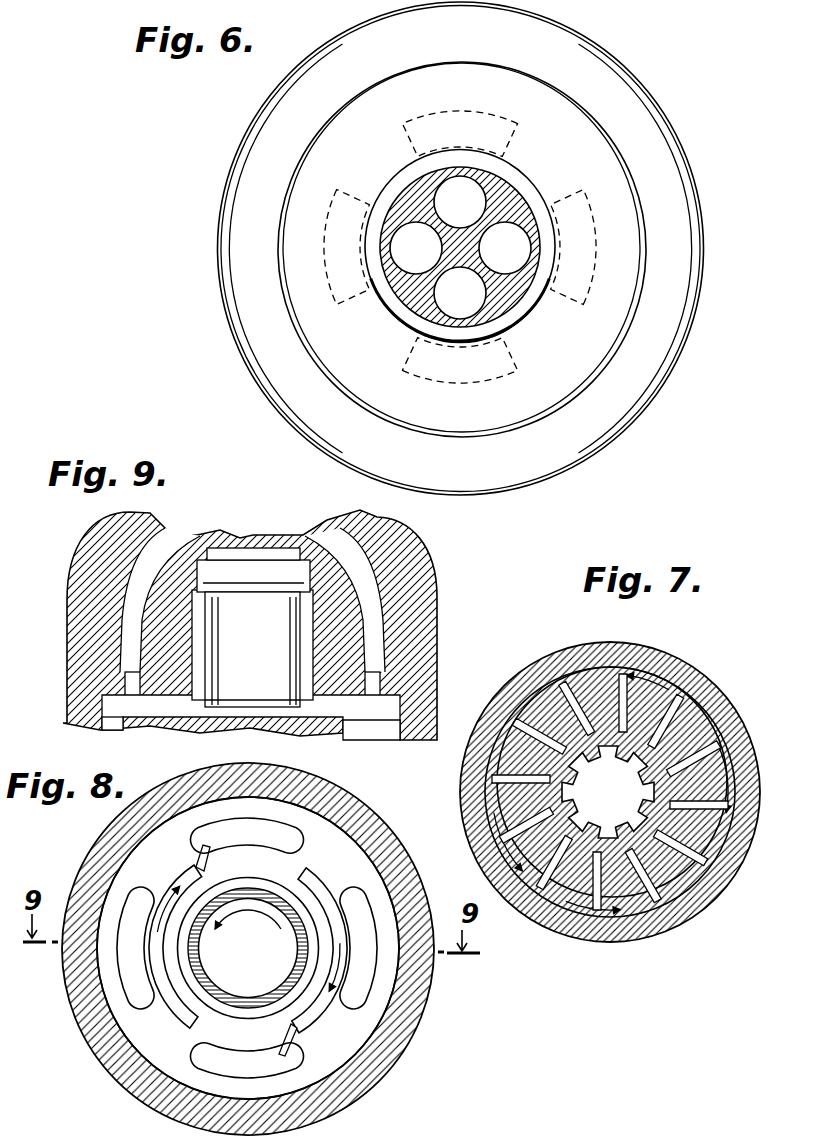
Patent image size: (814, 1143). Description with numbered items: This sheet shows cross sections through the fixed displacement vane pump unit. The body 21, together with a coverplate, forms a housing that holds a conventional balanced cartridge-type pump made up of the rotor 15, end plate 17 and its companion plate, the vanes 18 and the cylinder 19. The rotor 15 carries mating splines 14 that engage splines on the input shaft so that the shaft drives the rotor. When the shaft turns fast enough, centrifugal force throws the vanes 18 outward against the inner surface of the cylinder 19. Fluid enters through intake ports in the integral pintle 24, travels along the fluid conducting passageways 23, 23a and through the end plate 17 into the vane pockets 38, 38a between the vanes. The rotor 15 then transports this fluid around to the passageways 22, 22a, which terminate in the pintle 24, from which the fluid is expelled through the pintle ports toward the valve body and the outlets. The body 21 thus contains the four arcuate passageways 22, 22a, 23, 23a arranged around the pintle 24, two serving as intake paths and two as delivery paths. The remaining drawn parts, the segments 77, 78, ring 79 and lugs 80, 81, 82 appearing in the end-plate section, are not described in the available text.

In FIG. 7, the mating splines 14 is at (617, 818).
In FIG. 7, the rotor 15 is at (670, 884).
In FIG. 9, the end plate 17 is at (390, 708).
In FIG. 7, the end plate 17 is at (610, 792).
In FIG. 8, the end plate 17 is at (165, 1058).
In FIG. 7, the vanes 18 is at (590, 658).
In FIG. 7, the cylinder 19 is at (652, 660).
In FIG. 6, the body 21 is at (684, 177).
In FIG. 9, the body 21 is at (417, 600).
In FIG. 8, the body 21 is at (72, 1007).
In FIG. 6, the fluid conducting passageway 22 is at (460, 202).
In FIG. 7, the fluid conducting passageway 22 is at (677, 667).
In FIG. 8, the fluid conducting passageway 22 is at (247, 835).
In FIG. 6, the fluid conducting passageway 22a is at (459, 293).
In FIG. 7, the fluid conducting passageway 22a is at (570, 910).
In FIG. 8, the fluid conducting passageway 22a is at (247, 1060).
In FIG. 6, the fluid conducting passageway 23 is at (505, 248).
In FIG. 9, the fluid conducting passageway 23 is at (337, 538).
In FIG. 7, the fluid conducting passageway 23 is at (487, 832).
In FIG. 8, the fluid conducting passageway 23 is at (150, 883).
In FIG. 6, the fluid conducting passageway 23a is at (415, 248).
In FIG. 9, the fluid conducting passageway 23a is at (170, 536).
In FIG. 7, the fluid conducting passageway 23a is at (730, 738).
In FIG. 8, the fluid conducting passageway 23a is at (367, 980).
In FIG. 6, the pintle 24 is at (392, 321).
In FIG. 7, the vane pocket 38 is at (520, 873).
In FIG. 7, the vane pocket 38a is at (723, 702).
In FIG. 9, the shutter segment 77 is at (380, 728).
In FIG. 8, the shutter segment 77 is at (308, 881).
In FIG. 9, the shutter segment 78 is at (167, 718).
In FIG. 8, the shutter segment 78 is at (188, 1023).
In FIG. 8, the valve ring 79 is at (207, 877).
In FIG. 8, the stop lug 80 is at (299, 1024).
In FIG. 8, the stop lug 81 is at (203, 856).
In FIG. 8, the stop lug 82 is at (290, 1042).